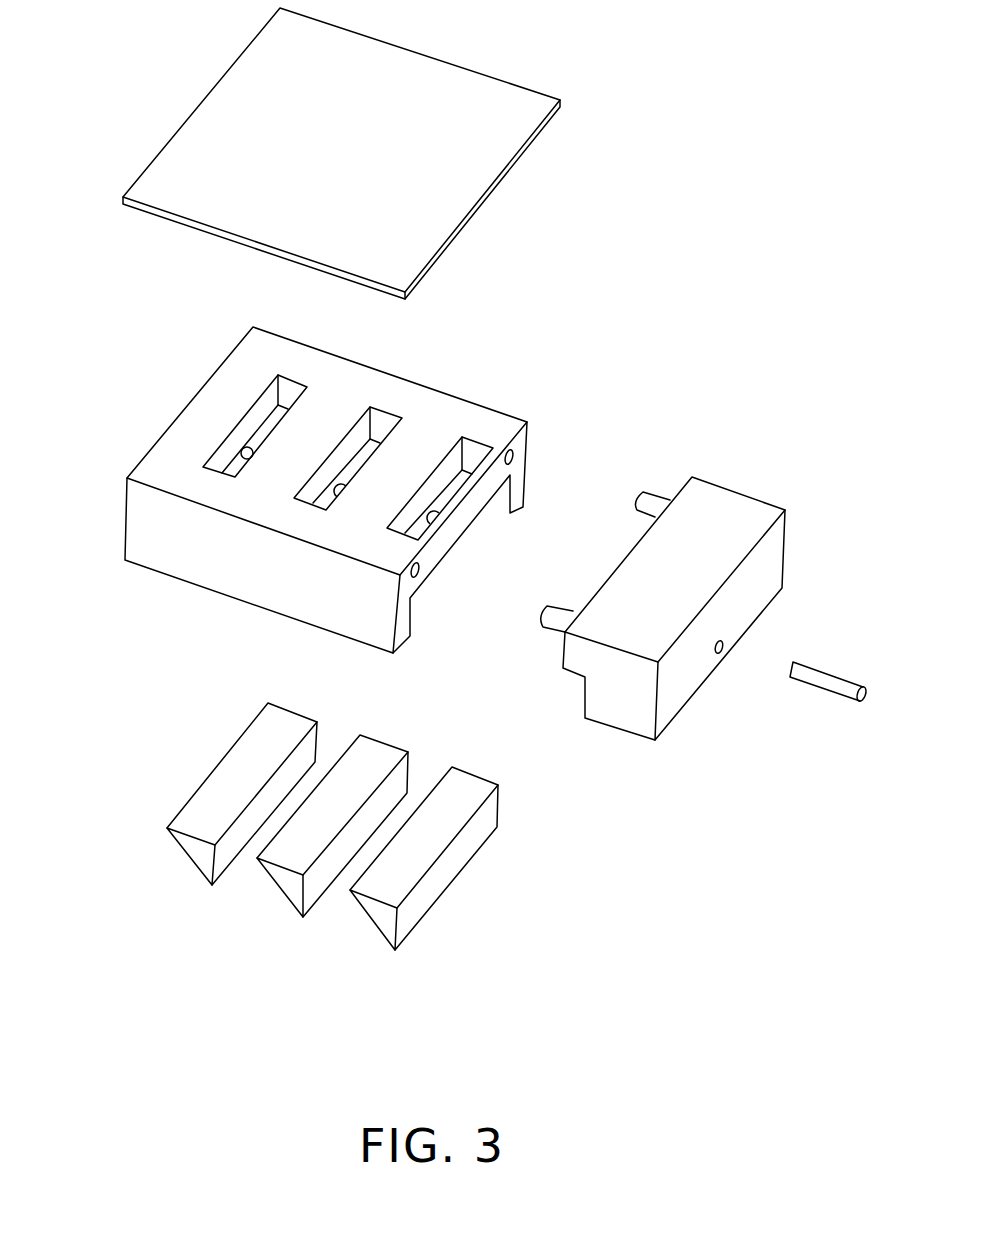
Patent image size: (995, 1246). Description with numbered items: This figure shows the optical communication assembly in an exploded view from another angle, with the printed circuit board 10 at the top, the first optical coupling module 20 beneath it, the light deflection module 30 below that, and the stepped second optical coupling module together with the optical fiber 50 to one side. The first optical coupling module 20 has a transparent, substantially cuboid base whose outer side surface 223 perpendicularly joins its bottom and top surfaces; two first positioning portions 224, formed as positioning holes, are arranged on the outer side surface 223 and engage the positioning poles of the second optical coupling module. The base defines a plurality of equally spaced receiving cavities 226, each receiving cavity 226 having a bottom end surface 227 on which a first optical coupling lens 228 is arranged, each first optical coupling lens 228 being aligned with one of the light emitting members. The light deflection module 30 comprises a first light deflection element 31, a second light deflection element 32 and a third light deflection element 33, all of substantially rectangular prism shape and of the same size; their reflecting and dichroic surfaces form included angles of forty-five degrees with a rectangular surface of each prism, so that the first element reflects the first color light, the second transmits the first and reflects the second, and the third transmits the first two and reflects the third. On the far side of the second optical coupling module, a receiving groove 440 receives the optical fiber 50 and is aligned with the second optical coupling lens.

The printed circuit board 10 is at (430, 82).
The first optical coupling module 20 is at (425, 364).
The outer side surface 223 is at (463, 511).
The first positioning portions 224 is at (421, 576).
The receiving cavities 226 is at (213, 470).
The bottom end surface 227 is at (270, 423).
The first optical coupling lens 228 is at (242, 450).
The light deflection module 30 is at (332, 868).
The first light deflection element 31 is at (203, 862).
The second light deflection element 32 is at (298, 900).
The third light deflection element 33 is at (414, 885).
The receiving groove 440 is at (725, 650).
The optical fiber 50 is at (835, 686).